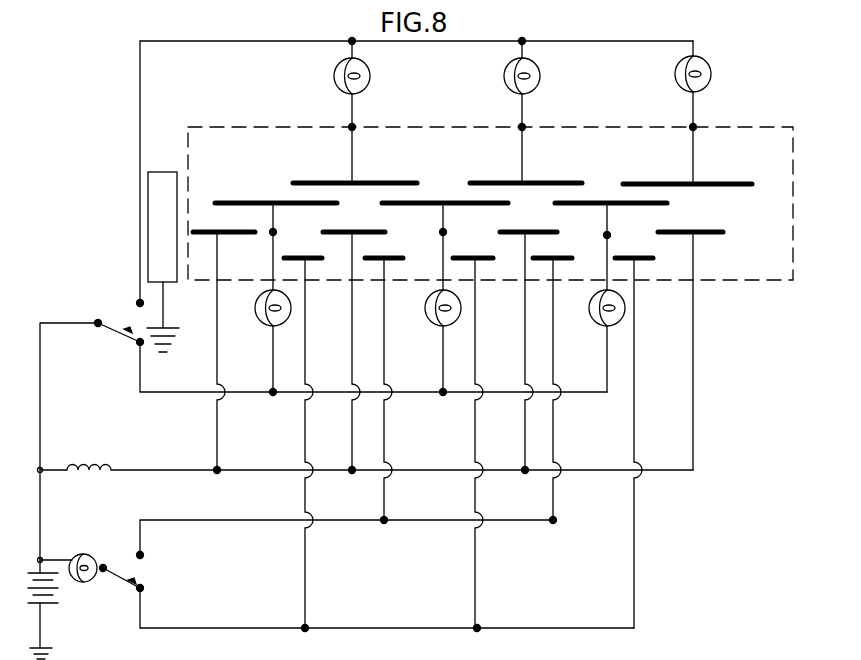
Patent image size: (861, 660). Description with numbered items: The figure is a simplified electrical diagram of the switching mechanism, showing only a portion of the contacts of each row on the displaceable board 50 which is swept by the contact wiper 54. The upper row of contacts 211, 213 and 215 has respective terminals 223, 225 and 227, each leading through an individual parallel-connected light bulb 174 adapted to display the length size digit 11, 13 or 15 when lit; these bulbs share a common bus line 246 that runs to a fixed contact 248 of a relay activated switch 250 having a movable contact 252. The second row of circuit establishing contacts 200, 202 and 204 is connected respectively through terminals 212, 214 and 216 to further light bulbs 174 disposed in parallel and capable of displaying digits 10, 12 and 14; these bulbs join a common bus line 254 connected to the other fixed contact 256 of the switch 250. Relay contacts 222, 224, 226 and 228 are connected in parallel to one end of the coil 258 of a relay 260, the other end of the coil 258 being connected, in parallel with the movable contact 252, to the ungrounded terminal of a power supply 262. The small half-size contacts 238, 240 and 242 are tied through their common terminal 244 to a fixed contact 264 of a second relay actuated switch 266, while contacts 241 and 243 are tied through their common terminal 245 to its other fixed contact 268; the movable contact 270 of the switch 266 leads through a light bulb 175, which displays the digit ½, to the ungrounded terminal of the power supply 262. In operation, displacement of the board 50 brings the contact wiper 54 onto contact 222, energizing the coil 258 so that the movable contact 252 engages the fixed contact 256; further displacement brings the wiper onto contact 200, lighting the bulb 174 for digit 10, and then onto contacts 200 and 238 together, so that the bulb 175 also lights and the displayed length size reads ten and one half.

The digit 10 is at (270, 316).
The digit 11 is at (363, 76).
The digit 12 is at (443, 316).
The digit 13 is at (535, 76).
The digit 14 is at (592, 316).
The digit 15 is at (706, 74).
The board 50 is at (775, 285).
The contact wiper 54 is at (170, 183).
The light bulb 174 is at (485, 199).
The light bulb 175 is at (82, 556).
The contact 200 is at (238, 200).
The contact 202 is at (436, 200).
The contact 204 is at (655, 206).
The contact 211 is at (385, 180).
The terminal 212 is at (276, 230).
The contact 213 is at (535, 180).
The terminal 214 is at (446, 230).
The contact 215 is at (718, 182).
The terminal 216 is at (609, 233).
The relay contact 222 is at (205, 229).
The terminal 223 is at (354, 125).
The relay contact 224 is at (373, 229).
The terminal 225 is at (524, 125).
The relay contact 226 is at (515, 229).
The terminal 227 is at (695, 125).
The relay contact 228 is at (712, 236).
The contact 238 is at (312, 262).
The contact 240 is at (483, 262).
The contact 241 is at (393, 262).
The contact 242 is at (641, 262).
The contact 243 is at (560, 262).
The common terminal 244 is at (310, 625).
The common terminal 245 is at (570, 532).
The common bus line 246 is at (140, 120).
The fixed contact 248 is at (133, 304).
The relay activated switch 250 is at (108, 330).
The movable contact 252 is at (121, 340).
The common bus line 254 is at (244, 395).
The fixed contact 256 is at (143, 344).
The coil 258 is at (110, 462).
The relay 260 is at (94, 485).
The power supply 262 is at (58, 603).
The fixed contact 264 is at (143, 589).
The relay actuated switch 266 is at (114, 565).
The fixed contact 268 is at (143, 555).
The movable contact 270 is at (140, 579).